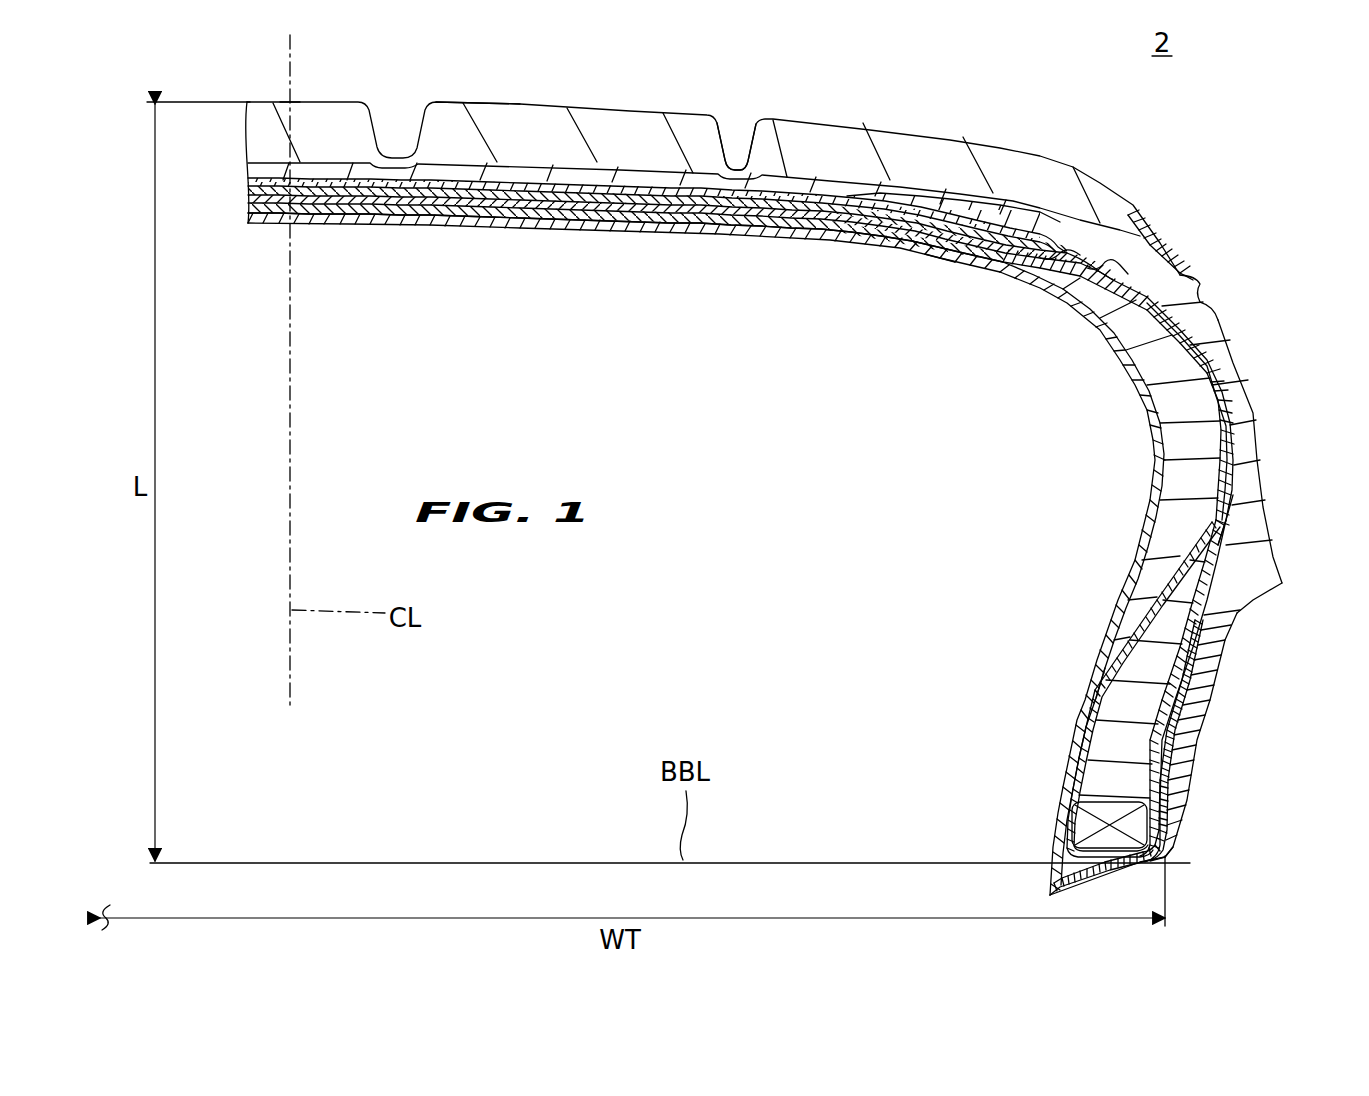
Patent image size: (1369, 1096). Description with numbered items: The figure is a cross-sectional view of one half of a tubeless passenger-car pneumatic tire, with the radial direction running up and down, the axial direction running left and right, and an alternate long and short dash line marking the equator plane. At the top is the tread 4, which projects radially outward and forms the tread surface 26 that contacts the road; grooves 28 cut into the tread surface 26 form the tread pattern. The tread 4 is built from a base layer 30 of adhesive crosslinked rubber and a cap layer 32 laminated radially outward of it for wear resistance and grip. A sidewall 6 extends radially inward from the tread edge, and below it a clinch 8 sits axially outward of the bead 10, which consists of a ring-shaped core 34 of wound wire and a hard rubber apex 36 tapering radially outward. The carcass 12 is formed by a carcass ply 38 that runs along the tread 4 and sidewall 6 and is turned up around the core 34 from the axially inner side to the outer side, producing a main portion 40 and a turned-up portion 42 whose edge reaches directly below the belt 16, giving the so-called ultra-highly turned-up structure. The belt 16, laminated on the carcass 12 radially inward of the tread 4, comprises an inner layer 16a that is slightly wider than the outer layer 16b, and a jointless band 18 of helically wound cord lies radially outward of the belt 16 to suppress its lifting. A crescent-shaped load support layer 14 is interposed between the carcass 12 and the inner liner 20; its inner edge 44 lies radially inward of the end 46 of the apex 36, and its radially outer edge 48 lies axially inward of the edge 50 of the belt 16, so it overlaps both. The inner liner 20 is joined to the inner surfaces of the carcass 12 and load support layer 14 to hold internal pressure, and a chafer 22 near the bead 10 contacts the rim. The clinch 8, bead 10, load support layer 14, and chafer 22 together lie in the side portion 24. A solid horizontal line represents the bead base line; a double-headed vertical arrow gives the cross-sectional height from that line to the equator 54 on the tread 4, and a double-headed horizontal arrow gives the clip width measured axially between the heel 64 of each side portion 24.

The tread 4 is at (1030, 130).
The sidewall 6 is at (1227, 350).
The clinch 8 is at (1202, 708).
The bead 10 is at (975, 750).
The carcass 12 is at (583, 222).
The load support layer 14 is at (1120, 342).
The belt 16 is at (520, 297).
The inner layer 16a is at (432, 207).
The outer layer 16b is at (487, 199).
The band 18 is at (567, 187).
The inner liner 20 is at (720, 235).
The chafer 22 is at (1167, 773).
The side portion 24 is at (1272, 405).
The tread surface 26 is at (458, 101).
The groove 28 is at (752, 140).
The base layer 30 is at (830, 185).
The cap layer 32 is at (912, 150).
The core 34 is at (1083, 818).
The apex 36 is at (1090, 773).
The carcass ply 38 is at (741, 364).
The main portion 40 is at (1143, 630).
The turned-up portion 42 is at (1193, 647).
The inner edge 44 is at (1100, 690).
The end 46 is at (1213, 530).
The radially outer edge 48 is at (940, 252).
The edge 50 is at (1137, 247).
The equator 54 is at (290, 101).
The heel 64 is at (1168, 859).